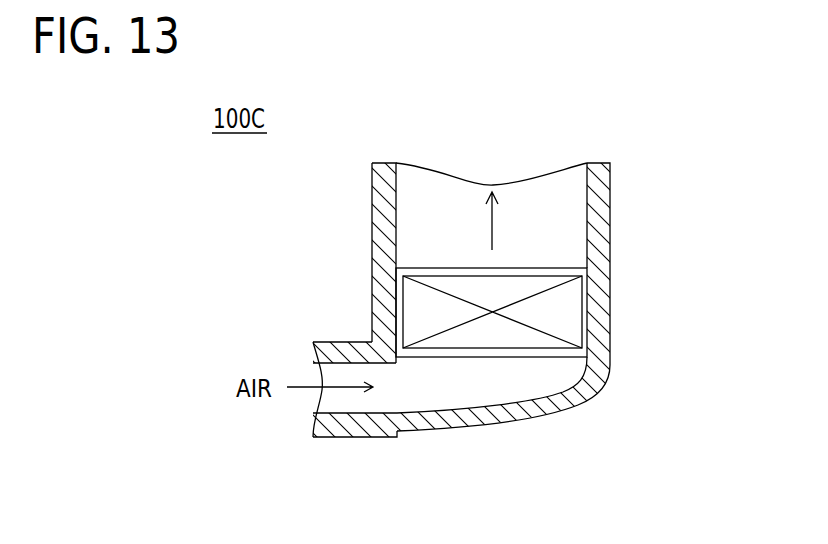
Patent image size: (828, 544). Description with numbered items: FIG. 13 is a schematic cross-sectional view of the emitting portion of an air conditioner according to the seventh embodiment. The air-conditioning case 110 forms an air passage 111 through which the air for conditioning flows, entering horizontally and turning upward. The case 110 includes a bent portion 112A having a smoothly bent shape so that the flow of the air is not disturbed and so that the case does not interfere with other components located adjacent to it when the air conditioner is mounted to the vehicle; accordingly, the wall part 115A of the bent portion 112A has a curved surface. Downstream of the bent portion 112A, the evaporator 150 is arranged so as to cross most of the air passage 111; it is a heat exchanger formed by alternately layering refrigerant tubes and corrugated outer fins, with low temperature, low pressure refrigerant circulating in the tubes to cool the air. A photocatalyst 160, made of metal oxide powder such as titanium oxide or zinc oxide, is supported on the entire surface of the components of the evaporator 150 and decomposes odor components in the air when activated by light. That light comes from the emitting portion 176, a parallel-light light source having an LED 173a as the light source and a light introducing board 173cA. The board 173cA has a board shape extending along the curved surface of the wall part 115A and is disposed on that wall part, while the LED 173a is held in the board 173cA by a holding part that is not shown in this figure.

The air-conditioning case 110 is at (347, 437).
The air passage 111 is at (417, 385).
The bent portion 112A is at (517, 428).
The wall part 115A is at (498, 429).
The evaporator 150 is at (567, 302).
The photocatalyst 160 is at (583, 320).
The emitting portion 176 is at (597, 415).
The LED 173a is at (597, 415).
The light introducing board 173cA is at (543, 395).